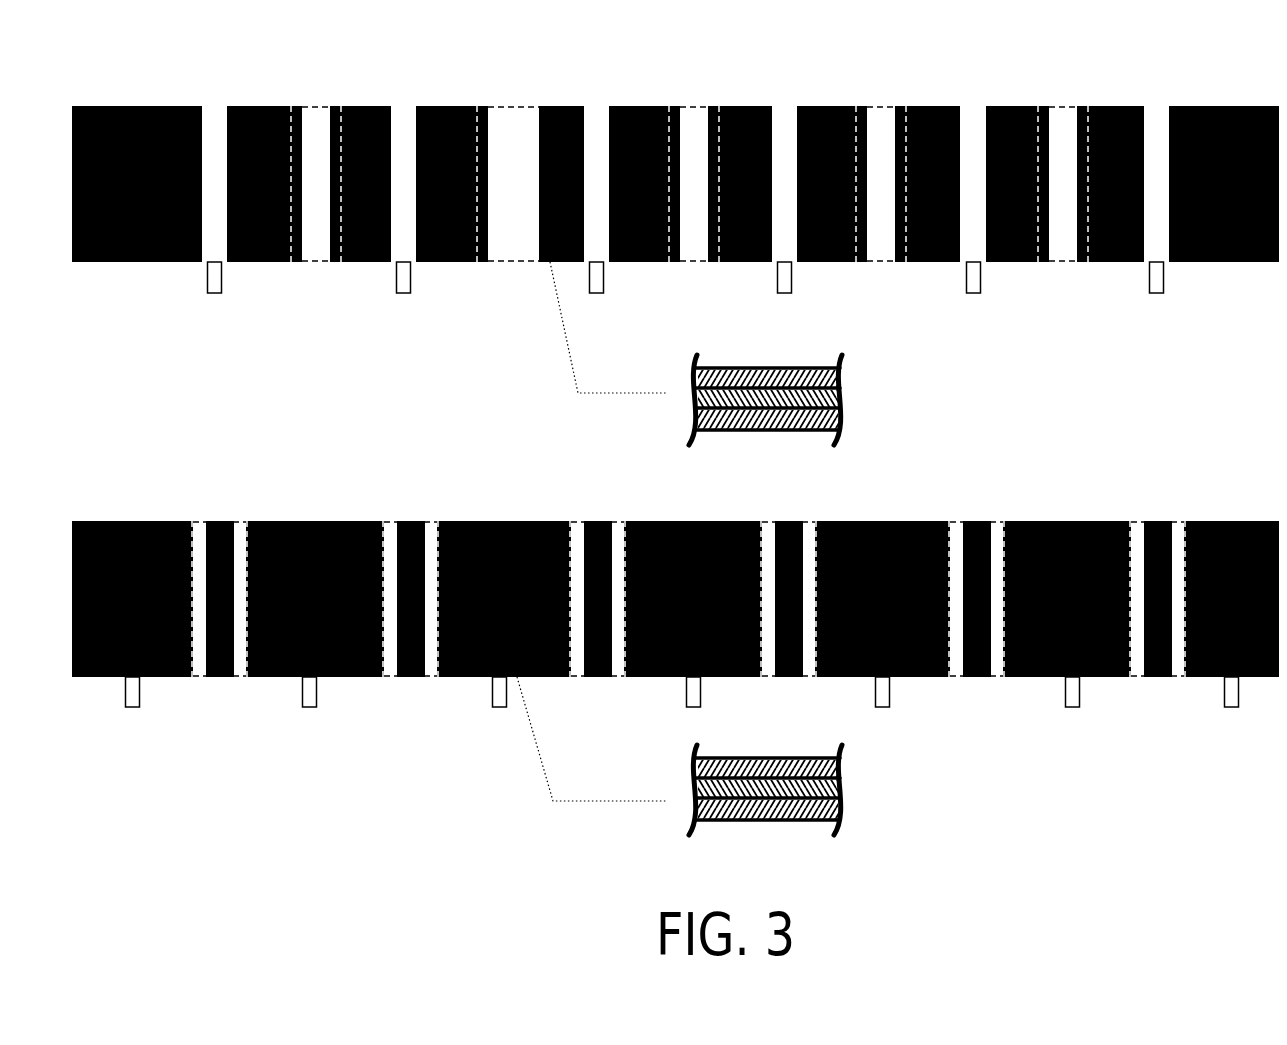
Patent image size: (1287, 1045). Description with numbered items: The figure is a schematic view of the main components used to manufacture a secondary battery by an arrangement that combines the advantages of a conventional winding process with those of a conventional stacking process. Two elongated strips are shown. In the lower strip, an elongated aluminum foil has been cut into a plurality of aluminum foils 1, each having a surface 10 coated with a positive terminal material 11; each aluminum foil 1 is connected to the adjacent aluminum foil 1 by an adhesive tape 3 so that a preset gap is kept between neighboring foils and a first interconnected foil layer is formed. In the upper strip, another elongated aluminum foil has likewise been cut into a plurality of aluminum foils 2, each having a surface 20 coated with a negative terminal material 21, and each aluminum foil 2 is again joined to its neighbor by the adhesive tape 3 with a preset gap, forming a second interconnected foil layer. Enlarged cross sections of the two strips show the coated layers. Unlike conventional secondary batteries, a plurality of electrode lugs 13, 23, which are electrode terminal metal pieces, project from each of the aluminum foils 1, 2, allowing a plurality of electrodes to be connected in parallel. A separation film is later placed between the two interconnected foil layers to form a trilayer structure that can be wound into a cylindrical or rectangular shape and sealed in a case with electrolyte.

The aluminum foil 1 is at (1196, 669).
The aluminum foil 2 is at (1192, 98).
The adhesive tape 3 is at (873, 98).
The surface 10 is at (792, 772).
The positive terminal material 11 is at (816, 810).
The electrode lug 13 is at (1064, 690).
The surface 20 is at (770, 415).
The negative terminal material 21 is at (770, 372).
The electrode lug 23 is at (1148, 288).